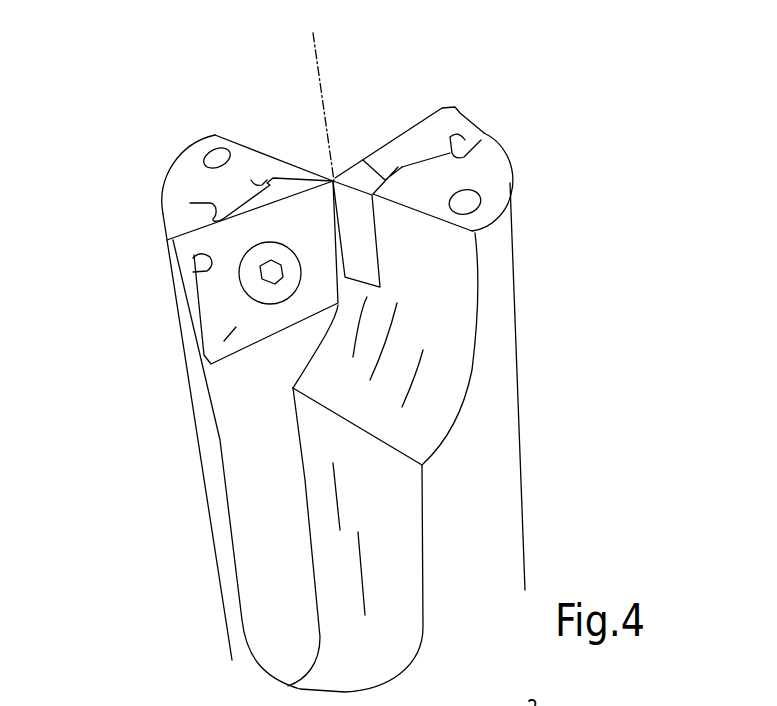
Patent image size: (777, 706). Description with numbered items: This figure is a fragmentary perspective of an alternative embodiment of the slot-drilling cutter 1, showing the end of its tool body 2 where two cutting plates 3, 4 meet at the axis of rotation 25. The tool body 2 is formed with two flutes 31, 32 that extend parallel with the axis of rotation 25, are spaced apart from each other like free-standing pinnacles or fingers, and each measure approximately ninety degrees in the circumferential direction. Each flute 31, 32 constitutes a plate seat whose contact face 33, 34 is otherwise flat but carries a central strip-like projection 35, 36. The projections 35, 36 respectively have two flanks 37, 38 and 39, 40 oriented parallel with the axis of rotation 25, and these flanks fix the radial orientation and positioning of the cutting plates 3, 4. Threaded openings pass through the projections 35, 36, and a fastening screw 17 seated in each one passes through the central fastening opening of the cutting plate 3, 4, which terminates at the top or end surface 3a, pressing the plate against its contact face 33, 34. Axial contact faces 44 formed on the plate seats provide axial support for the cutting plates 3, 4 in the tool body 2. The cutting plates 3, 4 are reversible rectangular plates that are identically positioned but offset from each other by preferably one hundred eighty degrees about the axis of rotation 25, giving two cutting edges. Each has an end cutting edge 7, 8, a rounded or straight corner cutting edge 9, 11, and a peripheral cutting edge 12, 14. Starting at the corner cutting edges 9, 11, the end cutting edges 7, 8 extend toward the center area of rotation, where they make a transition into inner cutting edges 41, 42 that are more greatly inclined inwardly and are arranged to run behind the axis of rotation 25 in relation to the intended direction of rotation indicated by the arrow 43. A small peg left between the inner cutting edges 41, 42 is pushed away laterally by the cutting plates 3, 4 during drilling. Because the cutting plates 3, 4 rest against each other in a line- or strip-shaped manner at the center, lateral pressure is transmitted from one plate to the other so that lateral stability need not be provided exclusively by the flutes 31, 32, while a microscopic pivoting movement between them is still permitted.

The slot-drilling cutter 1 is at (606, 105).
The tool body 2 is at (493, 438).
The cutting plate 3 is at (217, 328).
The top or end surface of the cutting plate 3a is at (211, 364).
The cutting plate 4 is at (452, 126).
The end cutting edge 7 is at (278, 215).
The end cutting edge 8 is at (390, 131).
The corner cutting edge 9 is at (193, 272).
The corner cutting edge 11 is at (453, 100).
The peripheral cutting edge 12 is at (195, 305).
The peripheral cutting edge 14 is at (466, 100).
The fastening screw 17 is at (271, 285).
The axis of rotation 25 is at (320, 73).
The flute 31 is at (187, 183).
The flute 32 is at (489, 171).
The contact face 33 is at (277, 150).
The contact face 34 is at (402, 192).
The strip-like projection 35 is at (244, 196).
The strip-like projection 36 is at (437, 168).
The flank 37 is at (210, 203).
The flank 38 is at (251, 180).
The flank 39 is at (413, 131).
The flank 40 is at (488, 135).
The inner cutting edge 41 is at (305, 183).
The inner cutting edge 42 is at (350, 155).
The arrow indicating the direction of rotation 43 is at (318, 48).
The axial contact face 44 is at (245, 350).